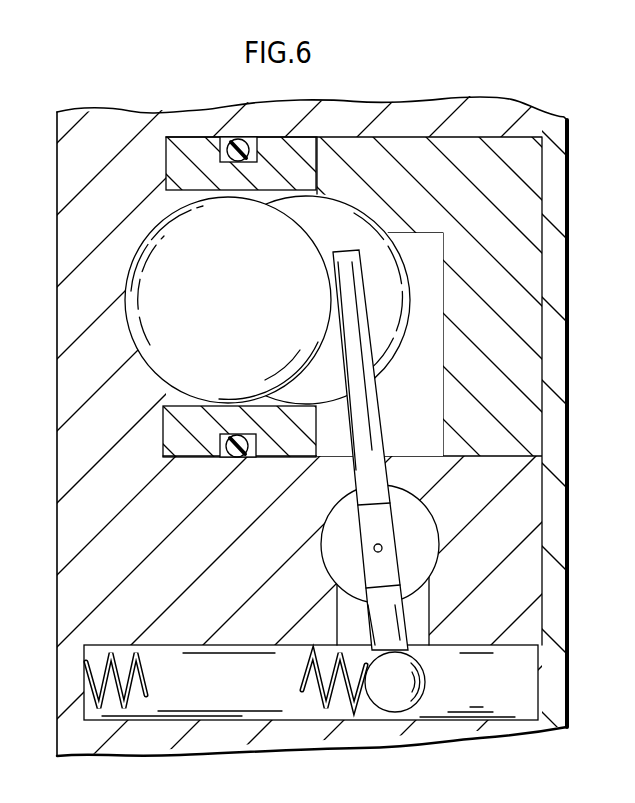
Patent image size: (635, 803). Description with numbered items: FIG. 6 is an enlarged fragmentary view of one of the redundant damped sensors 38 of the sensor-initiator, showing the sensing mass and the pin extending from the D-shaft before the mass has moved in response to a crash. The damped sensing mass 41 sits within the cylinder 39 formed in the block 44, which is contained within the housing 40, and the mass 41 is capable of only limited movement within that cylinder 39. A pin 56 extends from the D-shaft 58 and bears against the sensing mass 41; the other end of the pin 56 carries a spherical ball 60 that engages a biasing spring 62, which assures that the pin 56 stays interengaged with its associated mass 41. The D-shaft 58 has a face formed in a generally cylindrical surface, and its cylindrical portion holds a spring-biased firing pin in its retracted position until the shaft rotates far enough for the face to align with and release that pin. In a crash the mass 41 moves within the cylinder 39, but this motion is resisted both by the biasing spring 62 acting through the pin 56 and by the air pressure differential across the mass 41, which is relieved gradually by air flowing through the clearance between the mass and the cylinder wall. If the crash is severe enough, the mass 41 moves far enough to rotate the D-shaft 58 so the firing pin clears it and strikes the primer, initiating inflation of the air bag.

The damped sensor 38 is at (193, 150).
The cylinder 39 is at (217, 188).
The housing 40 is at (568, 487).
The damped sensing mass 41 is at (243, 305).
The block 44 is at (58, 558).
The pin 56 is at (370, 433).
The D-shaft 58 is at (335, 537).
The spherical ball 60 is at (418, 675).
The biasing spring 62 is at (305, 688).